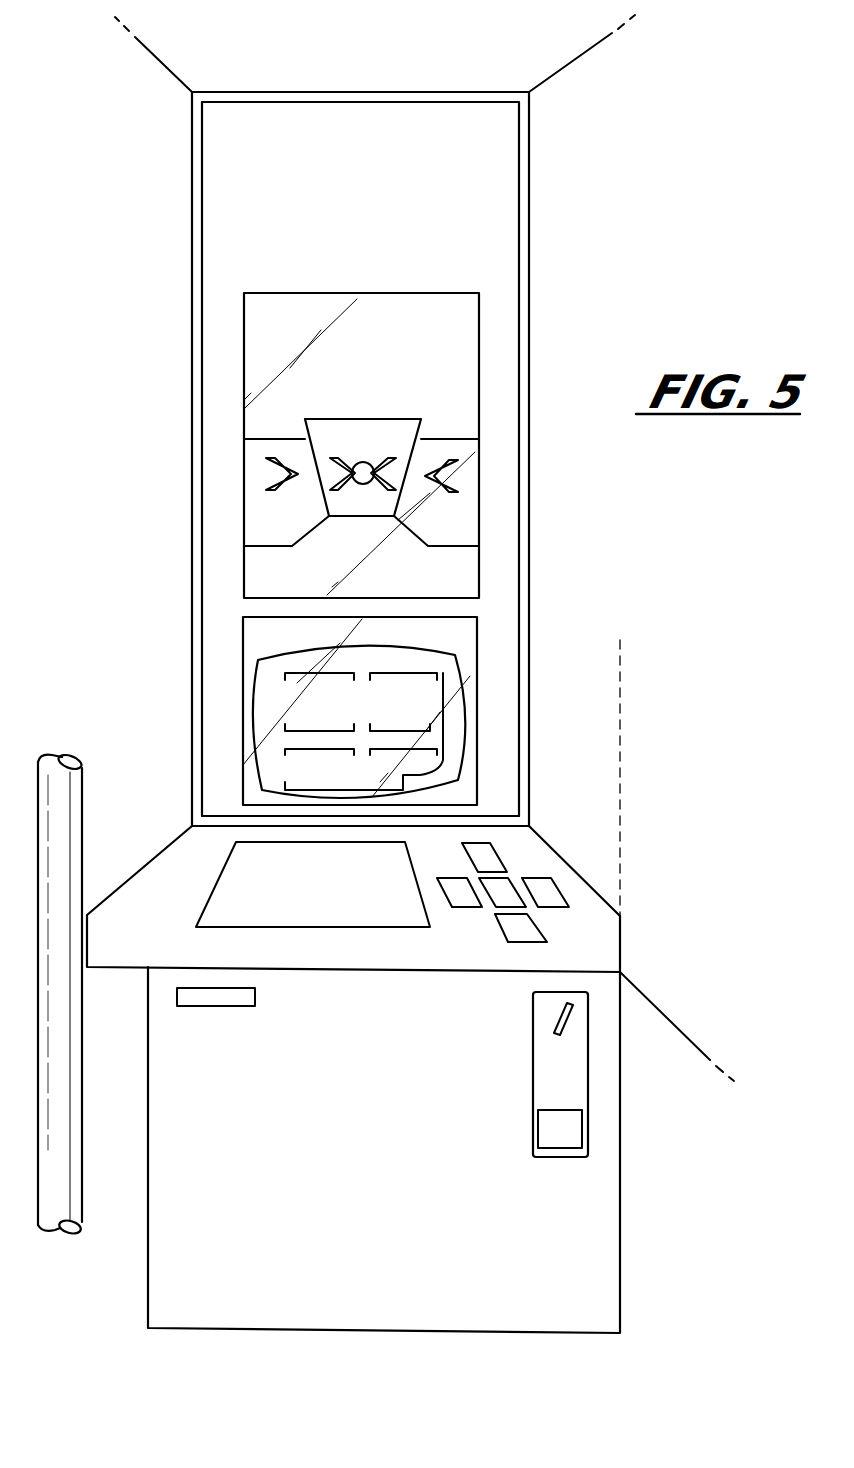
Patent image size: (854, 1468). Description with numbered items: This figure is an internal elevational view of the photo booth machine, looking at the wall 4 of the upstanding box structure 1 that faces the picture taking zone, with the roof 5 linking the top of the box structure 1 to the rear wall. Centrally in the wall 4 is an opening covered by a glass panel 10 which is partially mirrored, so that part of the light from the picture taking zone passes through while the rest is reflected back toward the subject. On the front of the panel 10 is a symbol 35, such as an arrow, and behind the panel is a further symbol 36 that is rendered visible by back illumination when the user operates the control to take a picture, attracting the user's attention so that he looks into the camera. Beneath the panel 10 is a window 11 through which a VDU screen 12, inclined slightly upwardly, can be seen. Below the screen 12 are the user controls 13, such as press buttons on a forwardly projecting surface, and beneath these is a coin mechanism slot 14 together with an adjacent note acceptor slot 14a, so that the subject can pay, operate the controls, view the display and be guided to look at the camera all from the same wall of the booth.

The box structure 1 is at (386, 674).
The wall 4 is at (183, 520).
The roof 5 is at (193, 75).
The glass panel 10 is at (422, 433).
The symbol 35 is at (462, 470).
The symbol 36 is at (366, 461).
The window 11 is at (426, 699).
The VDU screen 12 is at (450, 668).
The user controls 13 is at (509, 873).
The coin mechanism slot 14 is at (570, 1067).
The note acceptor slot 14a is at (218, 1000).